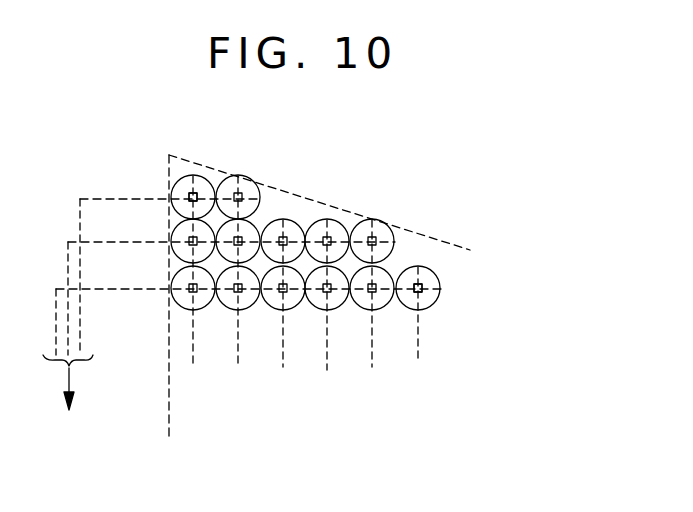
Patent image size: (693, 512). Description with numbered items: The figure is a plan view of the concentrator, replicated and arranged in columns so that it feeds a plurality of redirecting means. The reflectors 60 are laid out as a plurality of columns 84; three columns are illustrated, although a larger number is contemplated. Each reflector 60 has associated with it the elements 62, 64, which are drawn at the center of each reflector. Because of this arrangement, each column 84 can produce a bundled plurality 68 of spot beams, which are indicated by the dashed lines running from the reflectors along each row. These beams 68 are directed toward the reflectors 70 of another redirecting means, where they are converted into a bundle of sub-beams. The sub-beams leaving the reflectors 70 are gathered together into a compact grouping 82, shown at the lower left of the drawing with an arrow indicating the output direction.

The reflector 60 is at (172, 250).
The element associated with reflector 62 is at (196, 191).
The element associated with reflector 64 is at (305, 216).
The bundled plurality of spot beams 68 is at (152, 170).
The reflector of redirecting means 70 is at (80, 199).
The compact grouping 82 is at (69, 378).
The column 84 is at (486, 192).